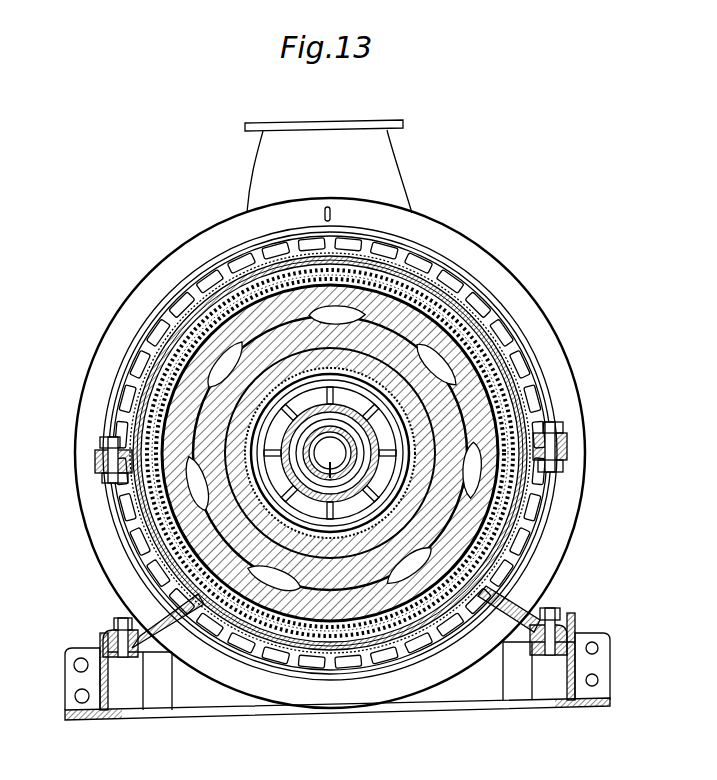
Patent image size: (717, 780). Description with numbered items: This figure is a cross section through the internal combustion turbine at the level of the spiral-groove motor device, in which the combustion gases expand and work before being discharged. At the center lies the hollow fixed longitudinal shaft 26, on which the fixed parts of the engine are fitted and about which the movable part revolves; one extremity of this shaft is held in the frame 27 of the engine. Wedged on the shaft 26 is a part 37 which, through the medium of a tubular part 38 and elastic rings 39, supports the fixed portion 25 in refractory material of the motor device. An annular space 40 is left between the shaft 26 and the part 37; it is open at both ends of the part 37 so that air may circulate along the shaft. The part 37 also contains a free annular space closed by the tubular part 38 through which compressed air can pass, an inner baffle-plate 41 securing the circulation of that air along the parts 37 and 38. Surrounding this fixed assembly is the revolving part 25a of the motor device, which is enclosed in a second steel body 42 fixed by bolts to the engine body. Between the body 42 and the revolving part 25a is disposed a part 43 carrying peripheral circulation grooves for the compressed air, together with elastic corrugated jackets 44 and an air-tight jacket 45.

The fixed portion of the motor device with spiral grooves 25 is at (433, 287).
The revolving part of the motor device 25a is at (398, 343).
The fixed longitudinal shaft 26 is at (240, 428).
The frame 27 is at (582, 640).
The part supporting the fixed portion 37 is at (435, 458).
The tubular part 38 is at (195, 370).
The elastic rings 39 is at (338, 340).
The annular space 40 is at (240, 483).
The inner baffle-plate 41 is at (500, 523).
The second steel body 42 is at (480, 343).
The part with circulation grooves 43 is at (505, 382).
The elastic corrugated jackets 44 is at (565, 462).
The air-tight jacket 45 is at (510, 417).